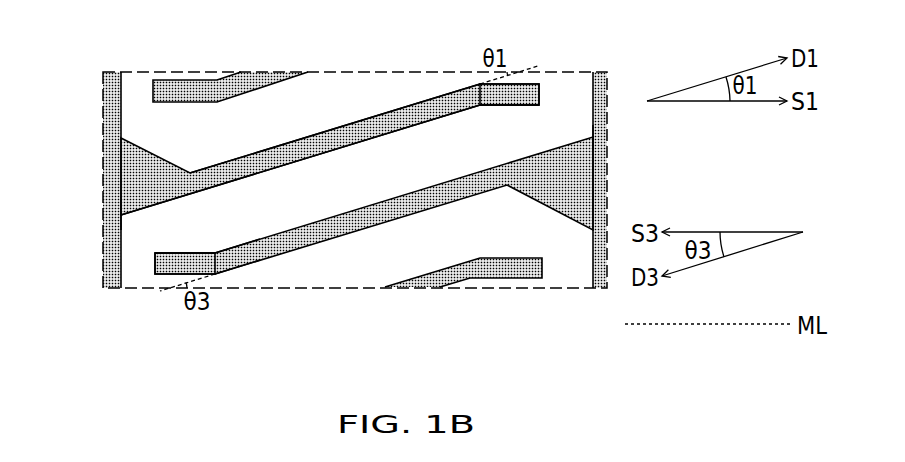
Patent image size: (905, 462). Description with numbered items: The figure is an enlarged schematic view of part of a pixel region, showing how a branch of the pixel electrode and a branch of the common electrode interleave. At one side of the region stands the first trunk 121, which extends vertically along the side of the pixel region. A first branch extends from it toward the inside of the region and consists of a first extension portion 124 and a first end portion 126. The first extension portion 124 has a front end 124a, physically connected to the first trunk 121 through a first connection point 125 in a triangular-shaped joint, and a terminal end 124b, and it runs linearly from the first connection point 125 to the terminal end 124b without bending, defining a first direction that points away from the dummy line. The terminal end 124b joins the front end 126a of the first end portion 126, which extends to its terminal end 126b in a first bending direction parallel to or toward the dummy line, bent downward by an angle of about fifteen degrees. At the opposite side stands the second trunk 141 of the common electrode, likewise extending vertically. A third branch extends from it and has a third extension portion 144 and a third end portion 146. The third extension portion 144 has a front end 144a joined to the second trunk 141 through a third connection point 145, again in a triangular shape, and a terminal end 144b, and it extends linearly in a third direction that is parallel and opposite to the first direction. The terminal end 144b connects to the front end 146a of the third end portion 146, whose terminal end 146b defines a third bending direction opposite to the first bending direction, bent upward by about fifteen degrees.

The first trunk 121 is at (113, 183).
The first extension portion 124 is at (375, 115).
The front end 124a is at (153, 182).
The terminal end 124b is at (464, 102).
The first connection point 125 is at (130, 217).
The first end portion 126 is at (513, 83).
The front end 126a is at (488, 107).
The terminal end 126b is at (533, 107).
The second trunk 141 is at (598, 187).
The third extension portion 144 is at (330, 242).
The front end 144a is at (564, 190).
The terminal end 144b is at (229, 262).
The third connection point 145 is at (592, 135).
The third end portion 146 is at (185, 275).
The front end 146a is at (211, 263).
The terminal end 146b is at (163, 252).